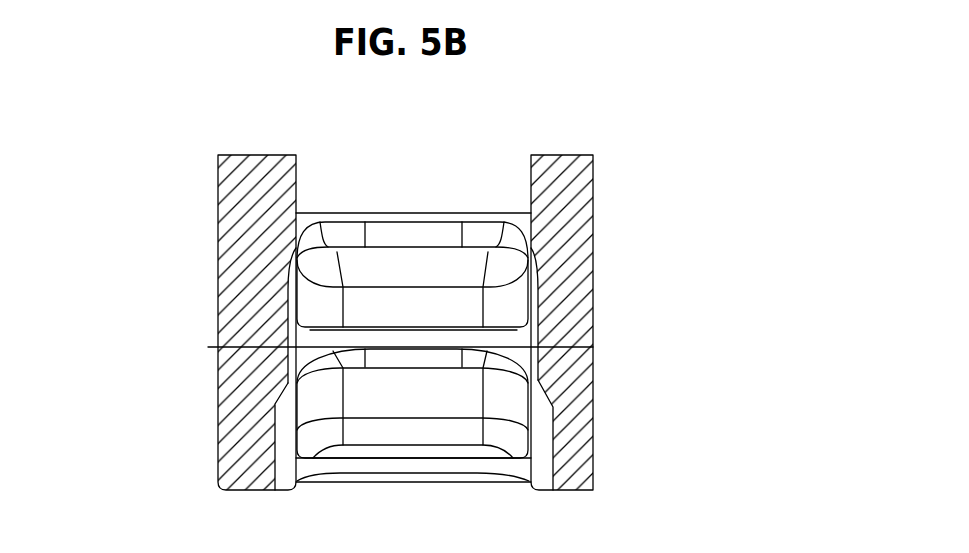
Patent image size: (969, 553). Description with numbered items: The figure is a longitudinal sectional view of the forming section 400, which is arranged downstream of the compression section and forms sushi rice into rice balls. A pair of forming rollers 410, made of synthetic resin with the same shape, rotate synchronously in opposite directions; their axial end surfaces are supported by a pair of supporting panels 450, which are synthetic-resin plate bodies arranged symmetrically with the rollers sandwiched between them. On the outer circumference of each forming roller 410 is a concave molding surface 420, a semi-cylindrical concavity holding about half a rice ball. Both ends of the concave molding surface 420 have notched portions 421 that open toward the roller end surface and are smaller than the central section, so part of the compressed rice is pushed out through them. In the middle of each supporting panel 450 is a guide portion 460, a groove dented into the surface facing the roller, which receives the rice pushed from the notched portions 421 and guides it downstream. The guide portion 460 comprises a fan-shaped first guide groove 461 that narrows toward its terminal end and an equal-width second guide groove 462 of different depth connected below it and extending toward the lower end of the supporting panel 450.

The forming section 400 is at (722, 242).
The forming roller 410 is at (401, 175).
The concave molding surface 420 is at (453, 208).
The notched portion 421 is at (292, 297).
The supporting panel 450 is at (200, 208).
The guide portion 460 is at (262, 412).
The first guide groove 461 is at (538, 320).
The second guide groove 462 is at (550, 416).